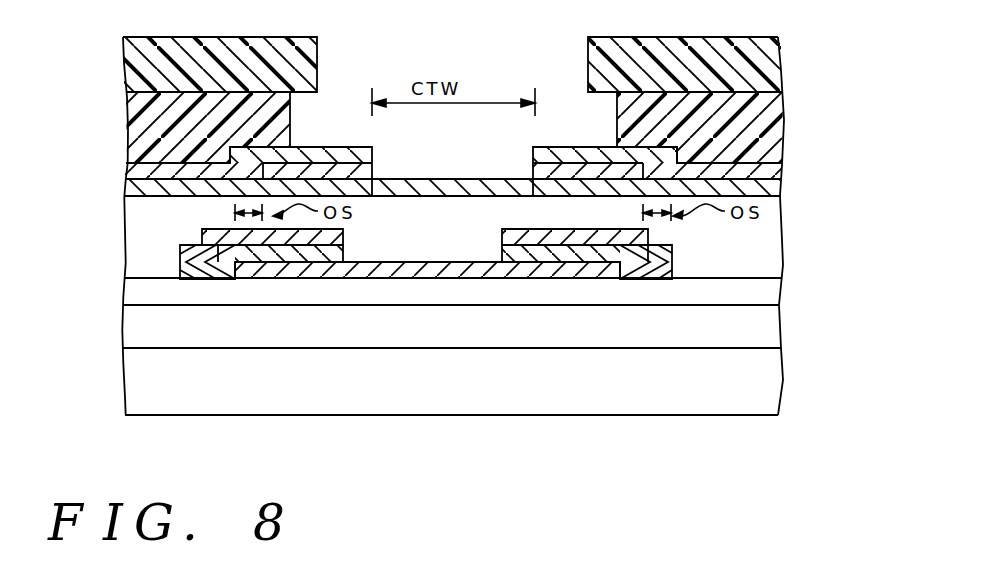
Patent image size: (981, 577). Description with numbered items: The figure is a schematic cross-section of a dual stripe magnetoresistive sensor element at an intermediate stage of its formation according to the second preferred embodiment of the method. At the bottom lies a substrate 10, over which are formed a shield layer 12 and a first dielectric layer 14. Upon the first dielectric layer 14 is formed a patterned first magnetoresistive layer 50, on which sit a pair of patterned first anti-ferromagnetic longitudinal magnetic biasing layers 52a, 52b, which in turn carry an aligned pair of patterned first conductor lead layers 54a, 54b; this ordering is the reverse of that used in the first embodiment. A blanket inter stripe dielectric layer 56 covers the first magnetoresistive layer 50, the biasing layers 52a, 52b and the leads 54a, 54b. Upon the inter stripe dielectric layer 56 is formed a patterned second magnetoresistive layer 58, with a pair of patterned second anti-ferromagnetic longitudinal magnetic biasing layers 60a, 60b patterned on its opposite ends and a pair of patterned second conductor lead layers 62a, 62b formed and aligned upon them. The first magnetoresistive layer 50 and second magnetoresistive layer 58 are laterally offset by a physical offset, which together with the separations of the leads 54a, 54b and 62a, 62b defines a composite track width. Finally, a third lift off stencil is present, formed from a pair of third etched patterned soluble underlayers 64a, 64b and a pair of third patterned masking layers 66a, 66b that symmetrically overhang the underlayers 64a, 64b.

The substrate 10 is at (148, 376).
The shield layer 12 is at (148, 326).
The first dielectric layer 14 is at (148, 286).
The patterned first magnetoresistive layer 50 is at (365, 266).
The patterned first anti-ferromagnetic longitudinal magnetic biasing layer 52a is at (260, 250).
The patterned first anti-ferromagnetic longitudinal magnetic biasing layer 52b is at (647, 246).
The patterned first conductor lead layer 54a is at (201, 260).
The patterned first conductor lead layer 54b is at (560, 258).
The blanket inter stripe dielectric layer 56 is at (148, 233).
The patterned second magnetoresistive layer 58 is at (470, 185).
The patterned second anti-ferromagnetic longitudinal magnetic biasing layer 60a is at (150, 189).
The patterned second anti-ferromagnetic longitudinal magnetic biasing layer 60b is at (760, 190).
The patterned second conductor lead layer 62a is at (150, 172).
The patterned second conductor lead layer 62b is at (760, 173).
The third etched patterned soluble underlayer 64a is at (150, 136).
The third etched patterned soluble underlayer 64b is at (760, 137).
The third patterned masking layer 66a is at (150, 62).
The third patterned masking layer 66b is at (760, 60).